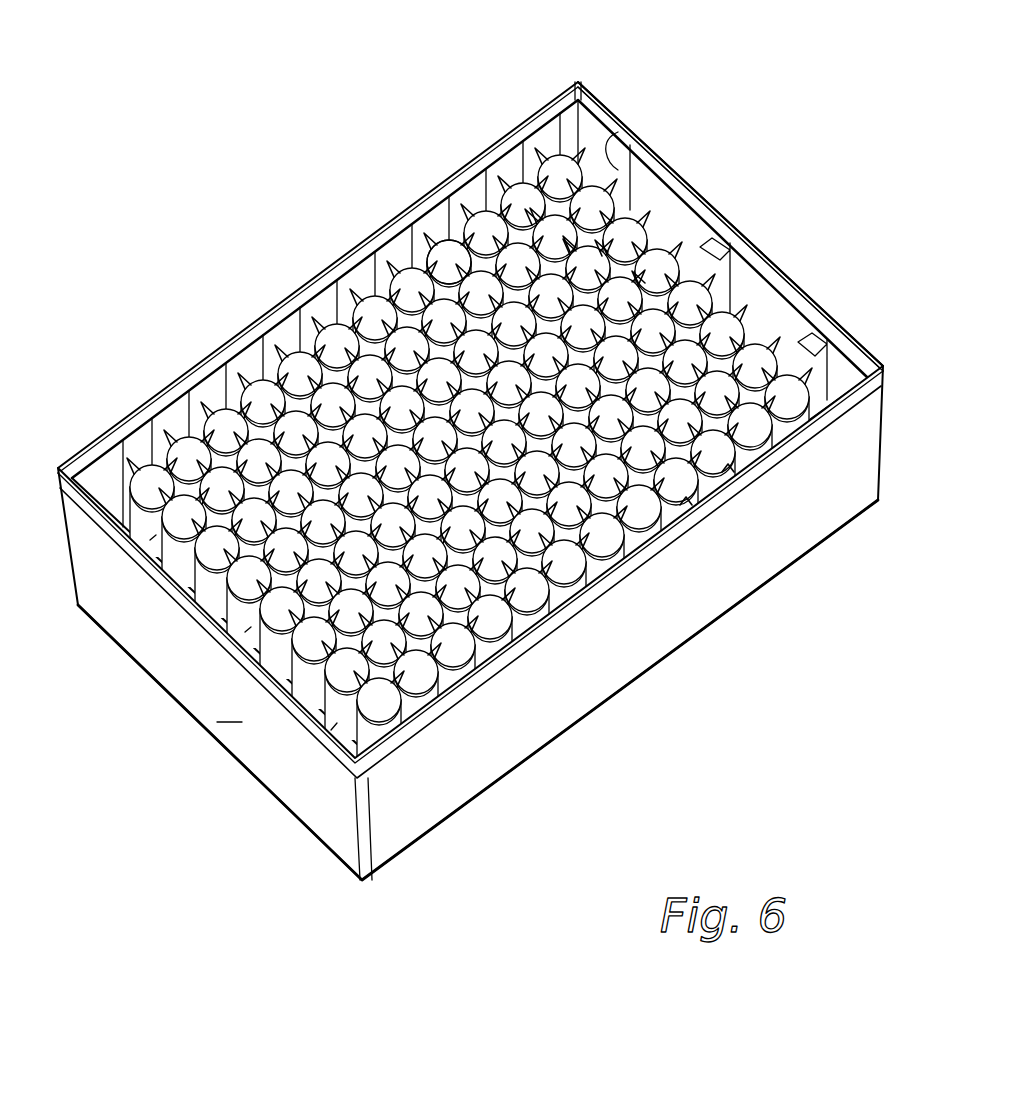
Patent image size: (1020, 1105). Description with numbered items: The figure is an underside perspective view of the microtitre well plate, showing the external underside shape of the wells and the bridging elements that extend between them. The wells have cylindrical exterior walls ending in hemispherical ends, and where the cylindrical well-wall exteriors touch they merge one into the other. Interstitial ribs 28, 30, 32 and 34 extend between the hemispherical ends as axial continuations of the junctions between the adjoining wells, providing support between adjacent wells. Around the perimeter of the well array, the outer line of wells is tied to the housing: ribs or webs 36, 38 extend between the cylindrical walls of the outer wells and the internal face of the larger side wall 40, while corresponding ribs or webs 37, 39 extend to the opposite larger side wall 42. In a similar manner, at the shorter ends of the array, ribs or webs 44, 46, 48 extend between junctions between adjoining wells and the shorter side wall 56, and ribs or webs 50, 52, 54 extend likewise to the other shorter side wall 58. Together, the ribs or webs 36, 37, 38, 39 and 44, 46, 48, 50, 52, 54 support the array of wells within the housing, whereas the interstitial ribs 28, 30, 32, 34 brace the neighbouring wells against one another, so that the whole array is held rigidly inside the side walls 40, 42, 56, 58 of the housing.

The rib 28 is at (553, 237).
The rib 30 is at (613, 237).
The rib 32 is at (640, 260).
The rib 34 is at (602, 237).
The rib or web 36 is at (457, 213).
The rib or web 37 is at (686, 505).
The rib or web 38 is at (493, 180).
The rib or web 39 is at (728, 472).
The larger side wall 40 is at (242, 322).
The larger side wall 42 is at (398, 832).
The rib or web 44 is at (618, 132).
The rib or web 46 is at (725, 236).
The rib or web 48 is at (808, 336).
The rib or web 50 is at (150, 540).
The rib or web 52 is at (245, 632).
The rib or web 54 is at (337, 723).
The shorter side wall 56 is at (592, 82).
The shorter side wall 58 is at (470, 623).